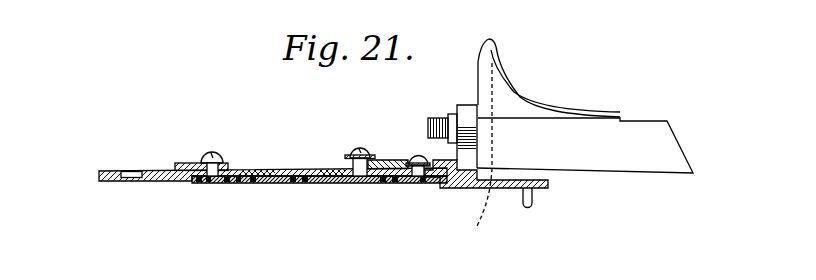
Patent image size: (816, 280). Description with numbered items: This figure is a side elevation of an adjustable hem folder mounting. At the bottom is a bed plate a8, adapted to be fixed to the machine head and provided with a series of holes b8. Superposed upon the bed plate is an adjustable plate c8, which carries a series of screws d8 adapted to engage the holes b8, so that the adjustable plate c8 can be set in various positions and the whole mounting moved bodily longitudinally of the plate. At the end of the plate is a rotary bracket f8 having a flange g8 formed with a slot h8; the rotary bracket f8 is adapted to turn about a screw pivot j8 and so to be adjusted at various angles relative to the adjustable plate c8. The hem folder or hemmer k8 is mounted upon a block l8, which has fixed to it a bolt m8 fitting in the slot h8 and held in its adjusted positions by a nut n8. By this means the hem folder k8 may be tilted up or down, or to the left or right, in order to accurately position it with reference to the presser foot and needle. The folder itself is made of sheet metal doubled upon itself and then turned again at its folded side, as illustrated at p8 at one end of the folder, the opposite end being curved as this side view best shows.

The bed plate a8 is at (151, 183).
The holes b8 is at (227, 183).
The adjustable plate c8 is at (263, 183).
The screws d8 is at (213, 142).
The rotary bracket f8 is at (383, 168).
The flange g8 is at (437, 189).
The slot h8 is at (457, 105).
The screw pivot j8 is at (406, 187).
The hem folder k8 is at (585, 145).
The block l8 is at (472, 115).
The bolt m8 is at (432, 119).
The nut n8 is at (446, 114).
The turned folded side of the folder p8 is at (491, 146).